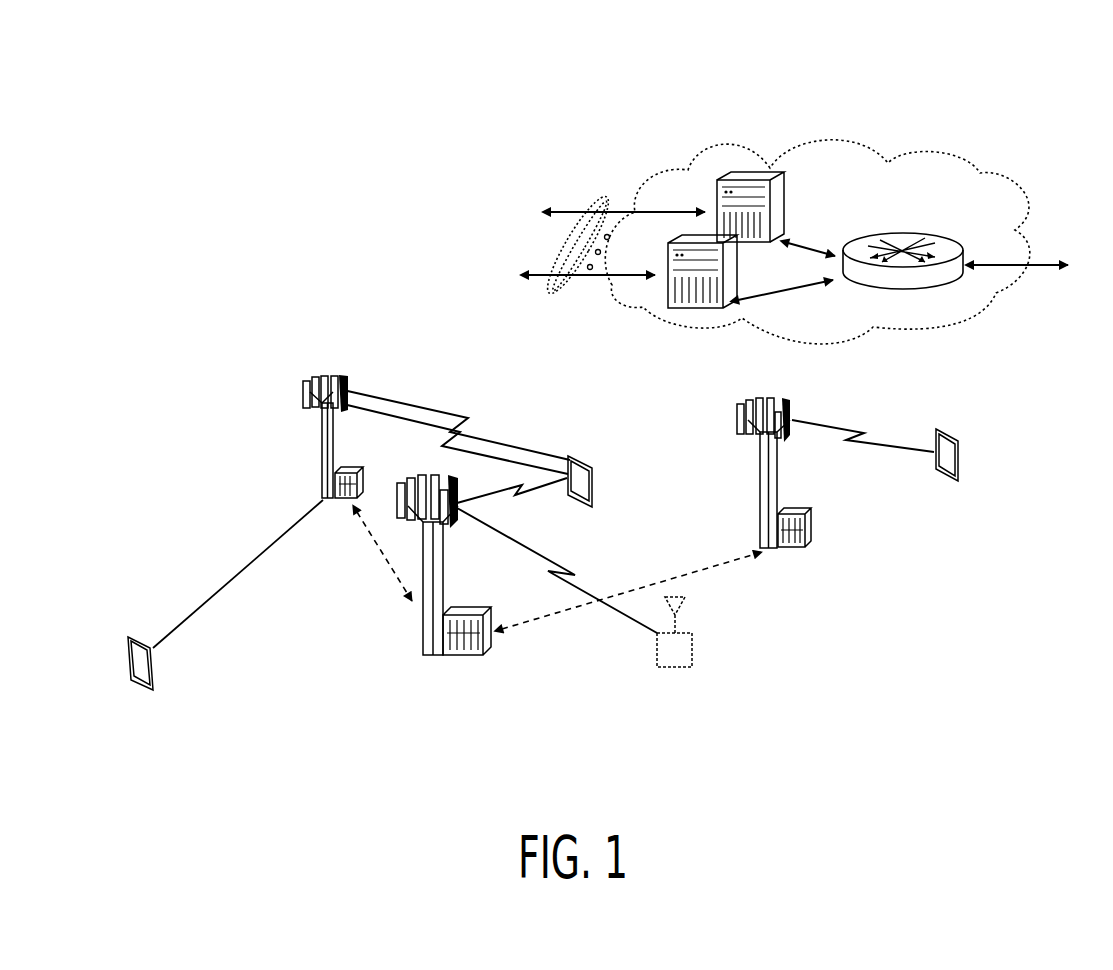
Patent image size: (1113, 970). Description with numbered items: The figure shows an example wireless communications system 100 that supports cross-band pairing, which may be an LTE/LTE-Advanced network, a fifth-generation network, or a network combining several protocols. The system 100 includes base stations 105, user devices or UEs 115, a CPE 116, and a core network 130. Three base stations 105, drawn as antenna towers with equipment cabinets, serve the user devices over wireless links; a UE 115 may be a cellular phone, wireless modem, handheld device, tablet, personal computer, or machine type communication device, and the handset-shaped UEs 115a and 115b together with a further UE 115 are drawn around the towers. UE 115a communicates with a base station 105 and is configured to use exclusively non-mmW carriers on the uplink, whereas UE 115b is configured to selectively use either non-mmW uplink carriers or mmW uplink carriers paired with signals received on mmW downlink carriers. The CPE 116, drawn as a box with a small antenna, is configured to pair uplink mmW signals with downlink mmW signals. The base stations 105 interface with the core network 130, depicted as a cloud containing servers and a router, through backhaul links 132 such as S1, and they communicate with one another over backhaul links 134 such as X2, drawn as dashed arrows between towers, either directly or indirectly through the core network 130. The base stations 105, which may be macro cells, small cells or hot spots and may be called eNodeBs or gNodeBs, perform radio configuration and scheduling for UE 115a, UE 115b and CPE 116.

The wireless communications system 100 is at (1057, 127).
The base station 105 is at (318, 485).
The user device (UE) 115 is at (950, 480).
The UE 115a is at (128, 660).
The UE 115b is at (578, 458).
The CPE 116 is at (657, 662).
The core network 130 is at (997, 297).
The backhaul link 132 is at (553, 293).
The backhaul link 134 is at (397, 582).